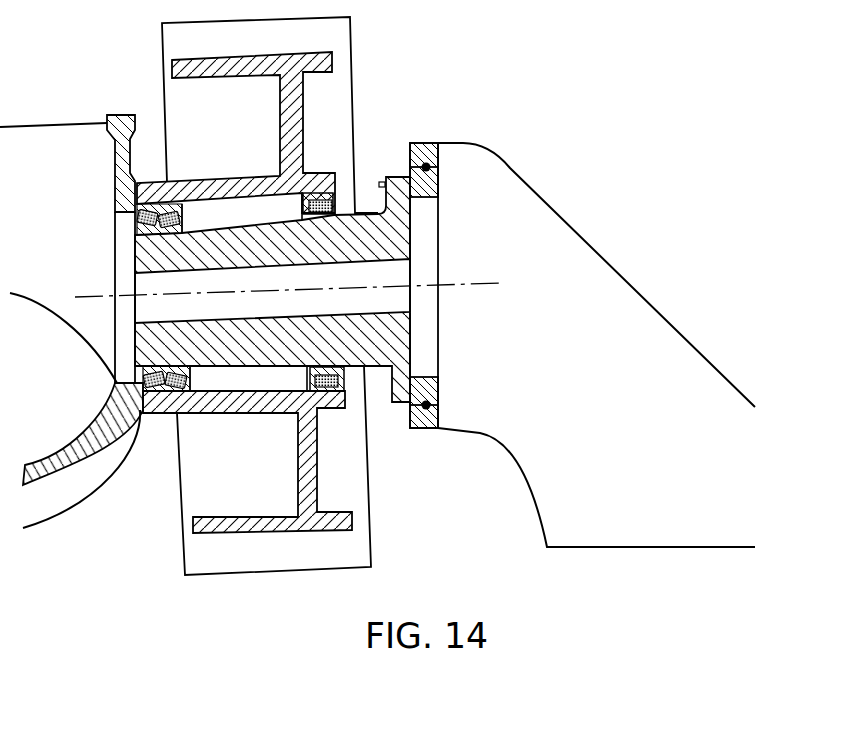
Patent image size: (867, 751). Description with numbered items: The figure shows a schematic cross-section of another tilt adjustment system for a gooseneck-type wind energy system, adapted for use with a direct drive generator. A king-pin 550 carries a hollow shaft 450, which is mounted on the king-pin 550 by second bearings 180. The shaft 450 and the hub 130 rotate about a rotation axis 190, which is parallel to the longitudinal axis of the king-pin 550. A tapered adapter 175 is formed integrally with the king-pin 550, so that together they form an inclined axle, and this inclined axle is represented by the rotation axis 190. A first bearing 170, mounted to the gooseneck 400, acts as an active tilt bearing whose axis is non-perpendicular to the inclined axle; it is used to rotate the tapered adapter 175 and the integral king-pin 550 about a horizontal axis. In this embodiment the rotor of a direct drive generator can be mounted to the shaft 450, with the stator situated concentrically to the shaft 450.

The hub 130 is at (82, 507).
The first bearing 170 is at (427, 430).
The tapered adapter 175 is at (408, 176).
The second bearings 180 is at (332, 392).
The rotation axis 190 is at (78, 297).
The gooseneck 400 is at (532, 508).
The hollow shaft 450 is at (230, 415).
The king-pin 550 is at (362, 212).